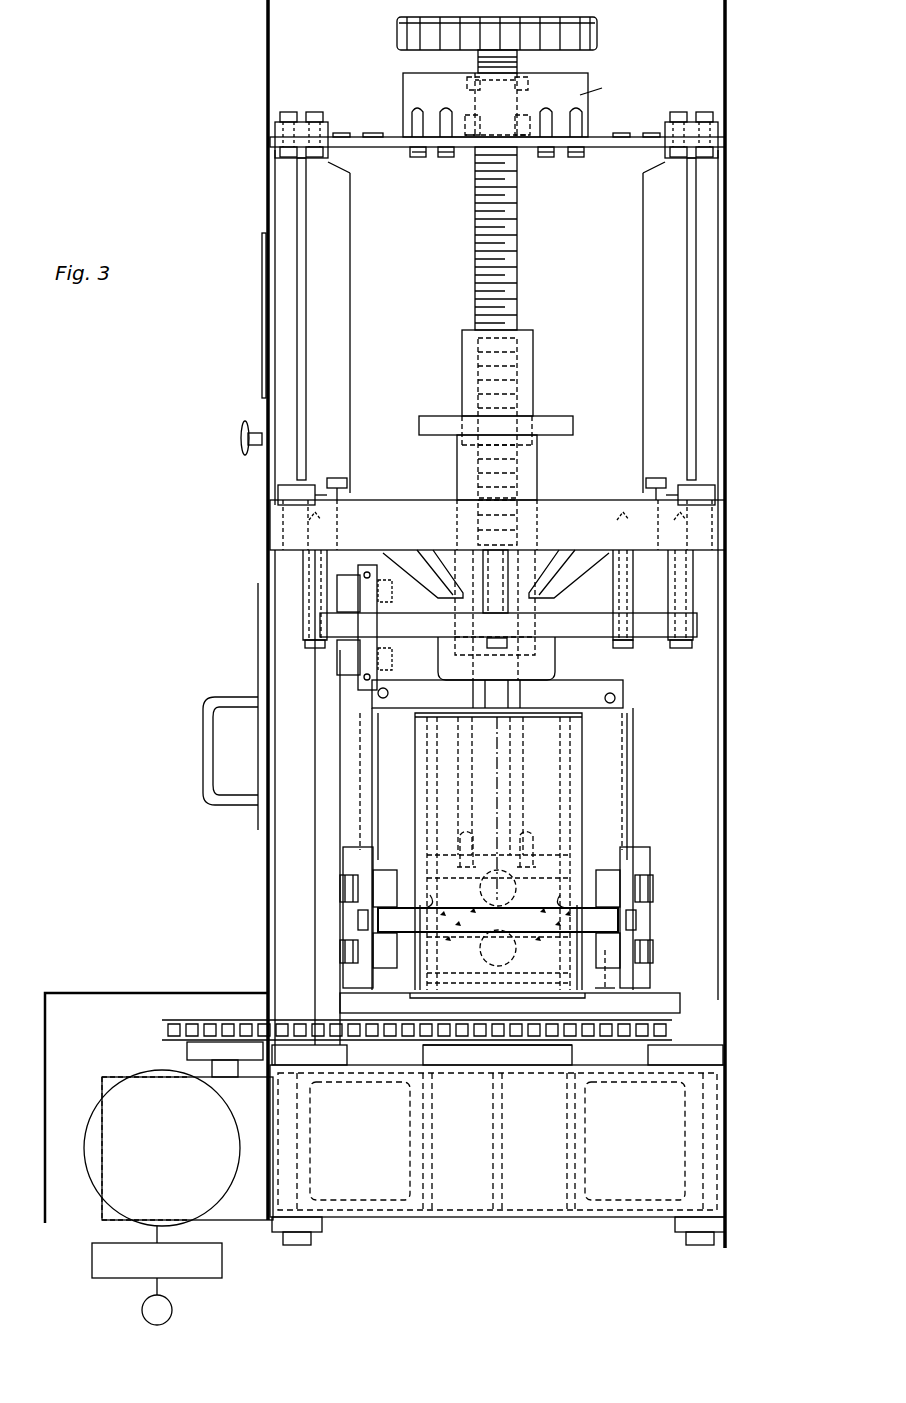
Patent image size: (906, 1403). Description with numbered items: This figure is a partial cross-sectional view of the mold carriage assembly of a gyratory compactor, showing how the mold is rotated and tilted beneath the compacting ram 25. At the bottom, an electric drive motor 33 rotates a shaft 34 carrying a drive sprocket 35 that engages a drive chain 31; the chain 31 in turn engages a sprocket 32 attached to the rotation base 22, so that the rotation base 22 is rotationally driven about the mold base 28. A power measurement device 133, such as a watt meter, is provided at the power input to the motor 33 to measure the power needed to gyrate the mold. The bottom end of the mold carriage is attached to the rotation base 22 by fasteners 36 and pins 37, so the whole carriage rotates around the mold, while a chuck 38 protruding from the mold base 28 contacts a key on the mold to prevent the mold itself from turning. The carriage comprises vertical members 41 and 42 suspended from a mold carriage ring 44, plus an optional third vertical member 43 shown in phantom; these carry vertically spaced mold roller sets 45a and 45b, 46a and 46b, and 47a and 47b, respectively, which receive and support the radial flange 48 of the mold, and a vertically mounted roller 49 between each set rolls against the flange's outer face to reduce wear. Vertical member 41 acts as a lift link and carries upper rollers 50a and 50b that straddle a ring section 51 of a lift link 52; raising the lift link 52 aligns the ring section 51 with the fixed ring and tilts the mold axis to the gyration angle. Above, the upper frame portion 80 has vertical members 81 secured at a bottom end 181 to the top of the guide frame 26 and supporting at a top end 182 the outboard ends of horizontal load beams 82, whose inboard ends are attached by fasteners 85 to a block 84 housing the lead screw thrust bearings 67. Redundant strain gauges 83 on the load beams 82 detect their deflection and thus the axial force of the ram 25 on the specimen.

The upper frame portion 80 is at (728, 50).
The block 84 is at (597, 35).
The strain gauges 83 is at (380, 133).
The lead screw thrust bearings 67 is at (470, 85).
The horizontal load beams 82 is at (370, 150).
The fasteners 85 is at (417, 158).
The top end 182 is at (268, 147).
The vertical members 81 is at (290, 383).
The bottom end 181 is at (268, 493).
The ram 25 is at (540, 480).
The guide frame 26 is at (700, 528).
The lift link 52 is at (300, 570).
The ring section 51 is at (582, 623).
The upper roller 50a is at (340, 598).
The upper roller 50b is at (340, 660).
The mold carriage ring 44 is at (577, 690).
The vertical member 42 is at (633, 750).
The vertical member 41 is at (350, 737).
The third vertical member 43 is at (510, 740).
The mold roller 47a is at (545, 950).
The mold roller 47b is at (485, 960).
The radial flange 48 is at (612, 880).
The mold roller 45a is at (375, 883).
The mold roller 45b is at (375, 950).
The mold roller 46a is at (615, 870).
The mold roller 46b is at (620, 952).
The vertically mounted roller 49 is at (345, 895).
The pins 37 is at (360, 985).
The fasteners 36 is at (650, 990).
The rotation base 22 is at (640, 1005).
The drive chain 31 is at (235, 1035).
The drive sprocket 35 is at (198, 1048).
The electric drive motor 33 is at (88, 1122).
The shaft 34 is at (233, 1105).
The power measurement device 133 is at (222, 1258).
The mold base 28 is at (455, 1058).
The sprocket 32 is at (610, 950).
The chuck 38 is at (598, 990).